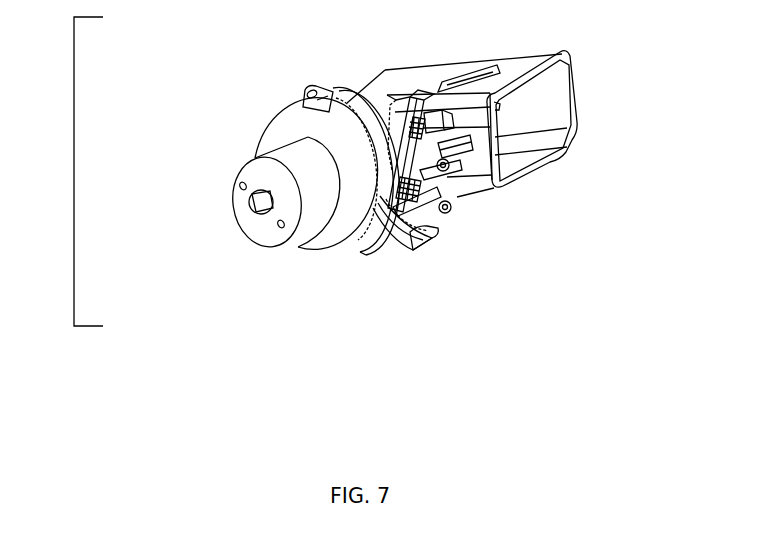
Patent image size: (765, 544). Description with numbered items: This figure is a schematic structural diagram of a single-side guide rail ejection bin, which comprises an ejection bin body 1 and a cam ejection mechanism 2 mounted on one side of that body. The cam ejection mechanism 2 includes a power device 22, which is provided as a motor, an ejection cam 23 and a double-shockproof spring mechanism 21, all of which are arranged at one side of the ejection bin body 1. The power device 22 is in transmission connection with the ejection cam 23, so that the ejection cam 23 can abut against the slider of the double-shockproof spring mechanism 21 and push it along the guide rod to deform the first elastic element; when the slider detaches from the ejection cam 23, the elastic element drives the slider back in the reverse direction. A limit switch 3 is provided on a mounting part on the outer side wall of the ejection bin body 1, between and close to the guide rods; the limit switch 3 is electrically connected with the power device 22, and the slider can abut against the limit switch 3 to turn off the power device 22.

The ejection bin body 1 is at (576, 113).
The cam ejection mechanism 2 is at (74, 172).
The limit switch 3 is at (423, 167).
The double-shockproof spring mechanism 21 is at (383, 119).
The power device 22 is at (250, 137).
The ejection cam 23 is at (383, 235).